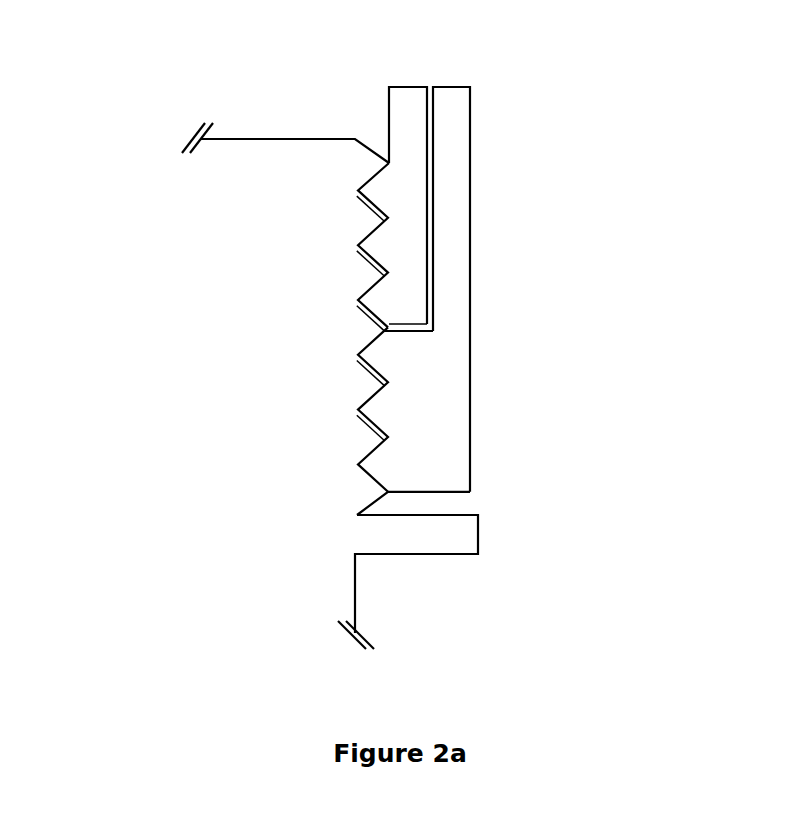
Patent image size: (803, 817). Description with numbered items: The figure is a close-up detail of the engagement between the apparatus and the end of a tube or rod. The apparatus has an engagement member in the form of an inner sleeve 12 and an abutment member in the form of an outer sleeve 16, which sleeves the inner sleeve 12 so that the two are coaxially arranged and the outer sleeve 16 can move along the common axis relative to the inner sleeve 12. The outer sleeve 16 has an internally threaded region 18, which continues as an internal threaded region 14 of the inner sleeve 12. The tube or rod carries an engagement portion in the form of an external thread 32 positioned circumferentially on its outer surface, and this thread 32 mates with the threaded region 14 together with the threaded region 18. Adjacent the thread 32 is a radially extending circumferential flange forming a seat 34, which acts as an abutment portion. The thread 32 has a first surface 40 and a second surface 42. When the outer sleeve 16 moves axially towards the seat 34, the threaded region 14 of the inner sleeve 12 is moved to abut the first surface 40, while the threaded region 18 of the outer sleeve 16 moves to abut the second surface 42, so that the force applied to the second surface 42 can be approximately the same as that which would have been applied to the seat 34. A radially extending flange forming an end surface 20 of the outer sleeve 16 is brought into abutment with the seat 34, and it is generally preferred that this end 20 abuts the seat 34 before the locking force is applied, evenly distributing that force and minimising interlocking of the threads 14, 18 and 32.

The inner sleeve 12 is at (408, 82).
The internal threaded region of the inner sleeve 14 is at (382, 240).
The outer sleeve 16 is at (461, 82).
The internally threaded region of the outer sleeve 18 is at (383, 420).
The end surface 20 is at (456, 494).
The external thread 32 is at (332, 308).
The seat 34 is at (413, 518).
The first surface 40 is at (365, 232).
The second surface 42 is at (367, 425).